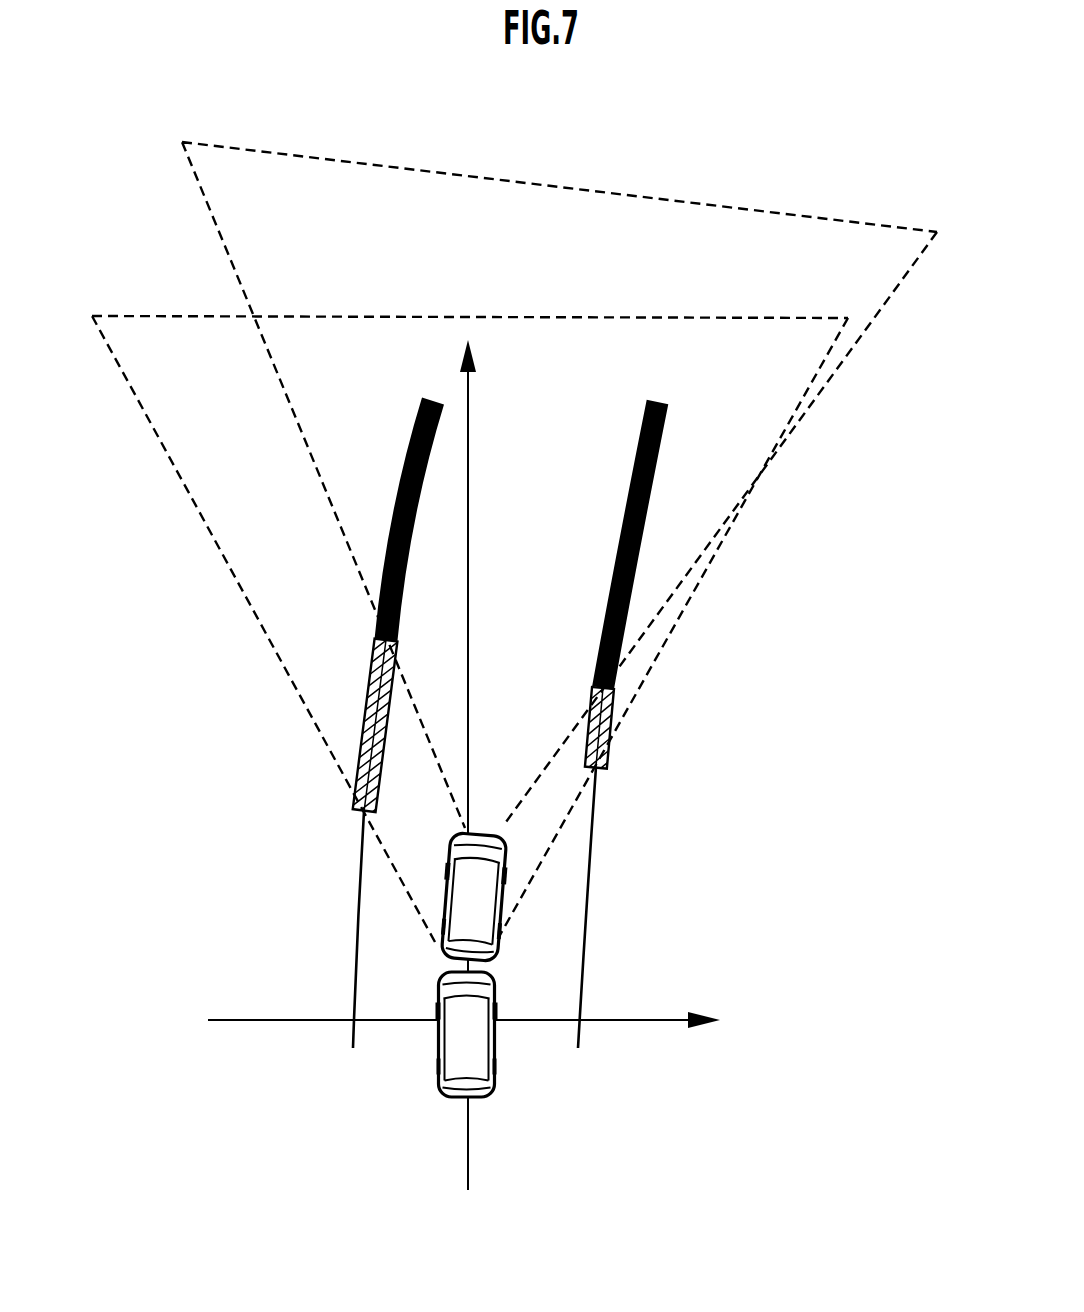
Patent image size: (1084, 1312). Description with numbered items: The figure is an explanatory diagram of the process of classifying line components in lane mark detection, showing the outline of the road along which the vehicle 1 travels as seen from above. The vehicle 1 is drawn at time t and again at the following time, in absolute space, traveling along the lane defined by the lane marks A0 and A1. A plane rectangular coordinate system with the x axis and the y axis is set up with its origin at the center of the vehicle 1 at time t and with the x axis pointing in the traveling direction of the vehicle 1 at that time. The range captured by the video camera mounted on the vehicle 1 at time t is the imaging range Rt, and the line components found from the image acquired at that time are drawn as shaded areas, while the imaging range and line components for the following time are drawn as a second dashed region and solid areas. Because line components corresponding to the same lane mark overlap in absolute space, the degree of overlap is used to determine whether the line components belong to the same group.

The vehicle 1 is at (457, 987).
The time t is at (471, 1033).
The lane mark A0 is at (590, 882).
The lane mark A1 is at (356, 953).
The imaging range Rt is at (182, 487).
The x axis x is at (480, 761).
The y axis y is at (479, 1021).